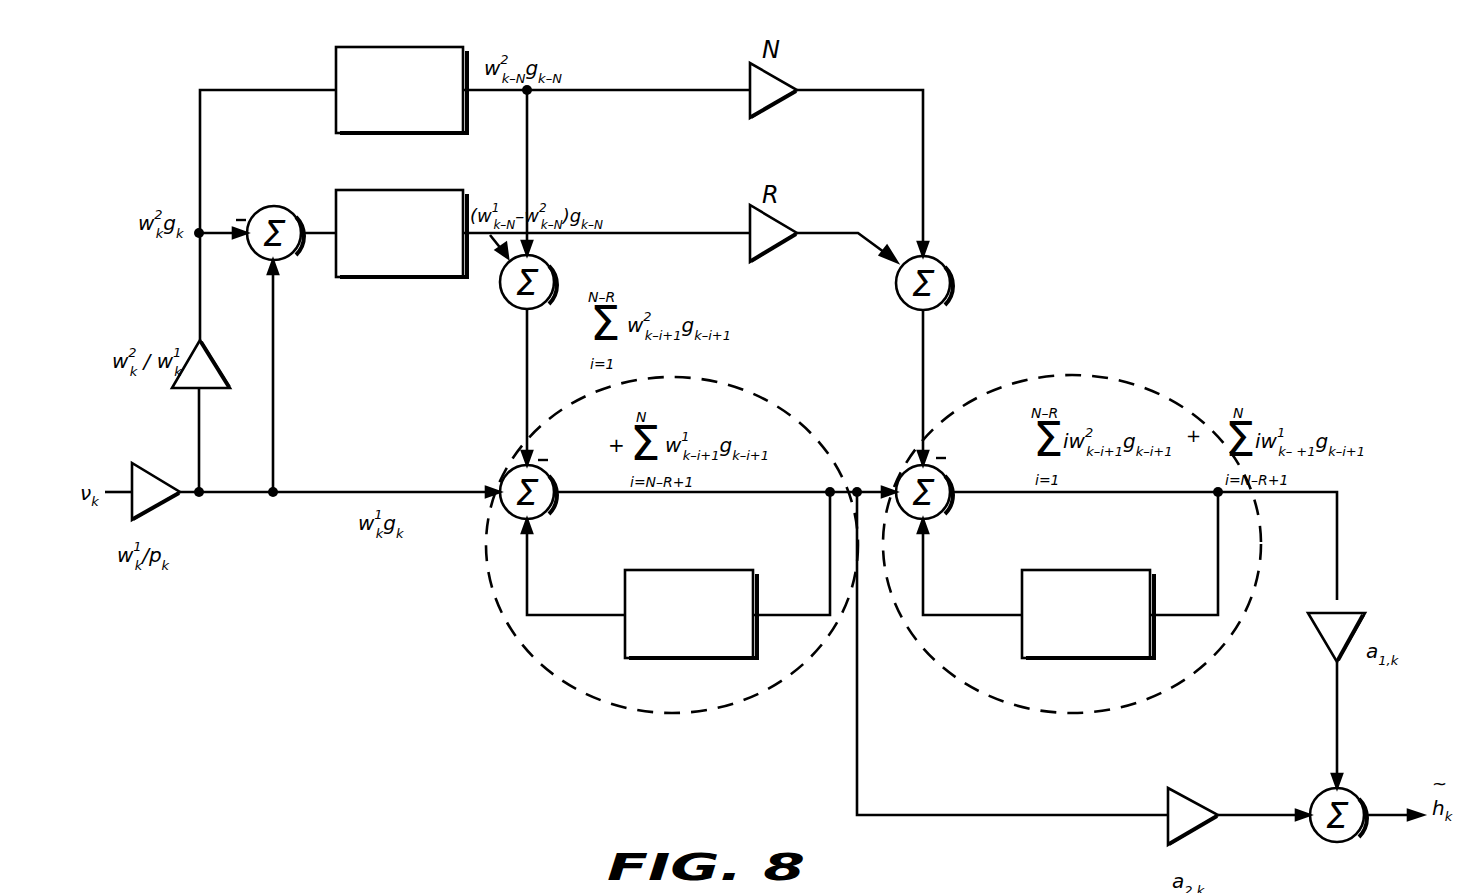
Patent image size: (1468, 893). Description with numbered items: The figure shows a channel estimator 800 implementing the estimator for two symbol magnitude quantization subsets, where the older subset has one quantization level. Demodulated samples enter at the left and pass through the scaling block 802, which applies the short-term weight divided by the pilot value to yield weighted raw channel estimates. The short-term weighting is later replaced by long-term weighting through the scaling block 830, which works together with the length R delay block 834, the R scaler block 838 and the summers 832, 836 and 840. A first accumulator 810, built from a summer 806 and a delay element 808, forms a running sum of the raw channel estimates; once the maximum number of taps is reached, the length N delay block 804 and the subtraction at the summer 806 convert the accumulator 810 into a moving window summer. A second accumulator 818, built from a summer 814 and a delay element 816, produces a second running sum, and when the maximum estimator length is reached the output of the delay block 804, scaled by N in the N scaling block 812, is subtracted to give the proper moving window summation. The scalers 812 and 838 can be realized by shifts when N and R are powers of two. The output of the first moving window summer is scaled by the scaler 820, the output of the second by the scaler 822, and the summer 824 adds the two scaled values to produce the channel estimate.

The channel estimator 800 is at (722, 823).
The scaling block 802 is at (152, 470).
The length N delay block 804 is at (405, 47).
The summer 806 is at (554, 477).
The delay element 808 is at (690, 570).
The first accumulator 810 is at (650, 712).
The N scaling block 812 is at (773, 103).
The summer 814 is at (950, 477).
The delay element 816 is at (1072, 570).
The second accumulator 818 is at (1053, 712).
The scaler 820 is at (1190, 795).
The scaler 822 is at (1350, 613).
The summer 824 is at (1340, 850).
The scaling block 830 is at (213, 362).
The summer 832 is at (277, 203).
The length R delay block 834 is at (405, 190).
The summer 836 is at (513, 307).
The R scaler block 838 is at (773, 246).
The summer 840 is at (948, 303).